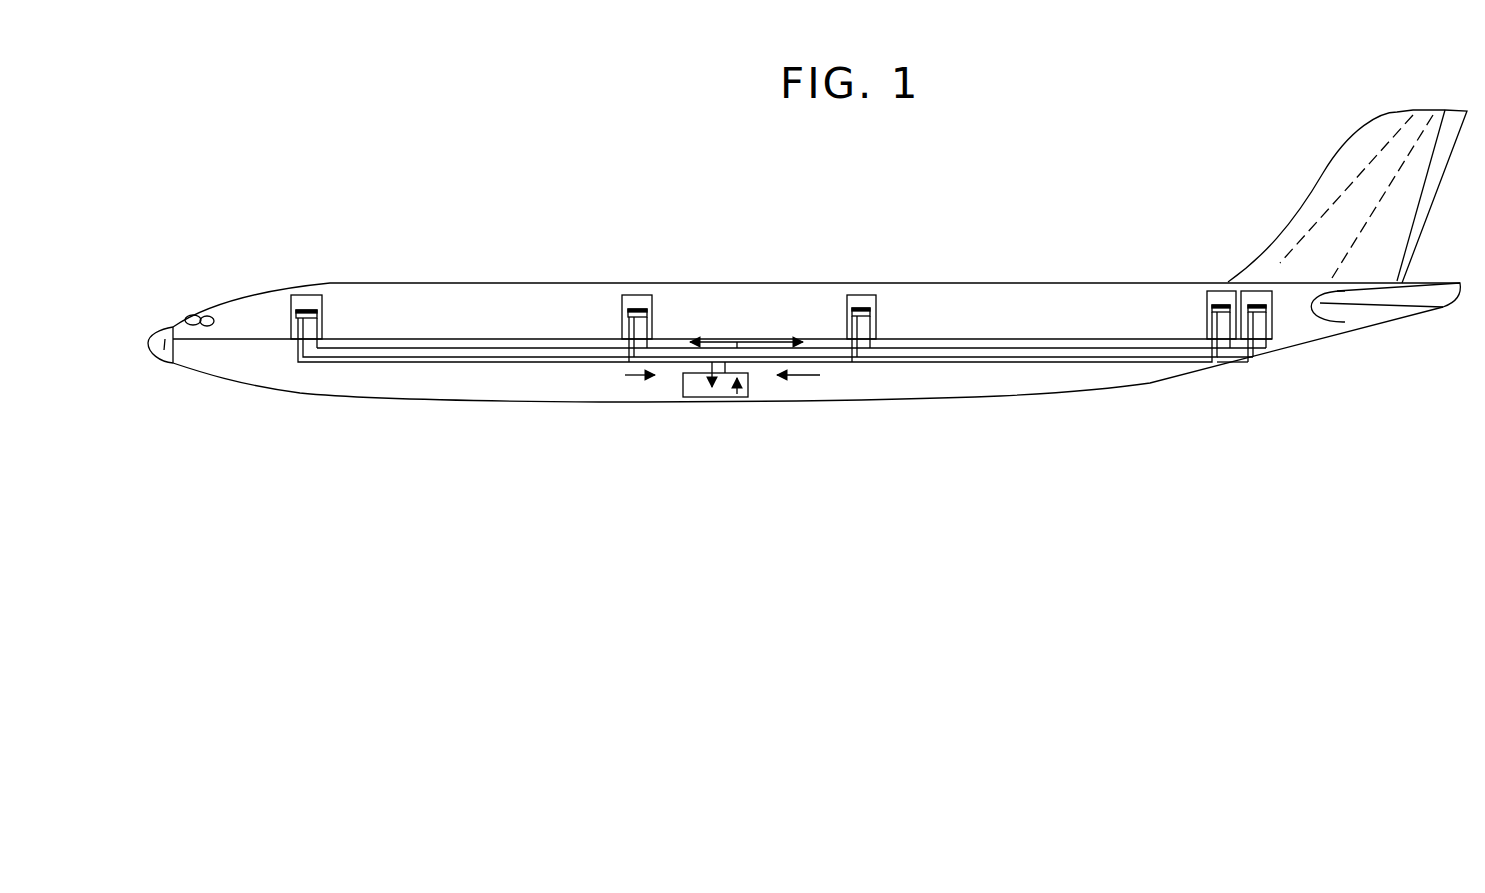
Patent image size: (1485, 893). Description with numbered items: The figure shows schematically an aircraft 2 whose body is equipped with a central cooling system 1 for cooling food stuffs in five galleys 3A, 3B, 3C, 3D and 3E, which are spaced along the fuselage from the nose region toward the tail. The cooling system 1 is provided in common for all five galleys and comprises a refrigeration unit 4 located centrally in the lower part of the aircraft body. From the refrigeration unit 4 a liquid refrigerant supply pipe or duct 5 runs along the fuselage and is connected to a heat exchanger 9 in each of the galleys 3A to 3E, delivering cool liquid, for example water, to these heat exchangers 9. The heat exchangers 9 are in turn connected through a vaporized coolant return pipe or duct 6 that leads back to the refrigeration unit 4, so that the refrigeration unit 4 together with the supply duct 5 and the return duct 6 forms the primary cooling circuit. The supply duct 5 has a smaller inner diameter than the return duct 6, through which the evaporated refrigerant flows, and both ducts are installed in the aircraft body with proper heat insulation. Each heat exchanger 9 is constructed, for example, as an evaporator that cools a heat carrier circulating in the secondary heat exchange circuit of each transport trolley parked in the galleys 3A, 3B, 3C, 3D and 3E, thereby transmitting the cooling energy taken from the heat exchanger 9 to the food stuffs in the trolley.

The cooling system 1 is at (588, 522).
The aircraft 2 is at (1412, 130).
The galley 3A is at (299, 300).
The galley 3B is at (633, 302).
The galley 3C is at (862, 302).
The galley 3D is at (1219, 297).
The galley 3E is at (1258, 297).
The refrigeration unit 4 is at (699, 384).
The liquid supply pipe or duct 5 is at (1008, 349).
The vaporized refrigerant return pipe or duct 6 is at (354, 364).
The heat exchanger 9 is at (313, 312).